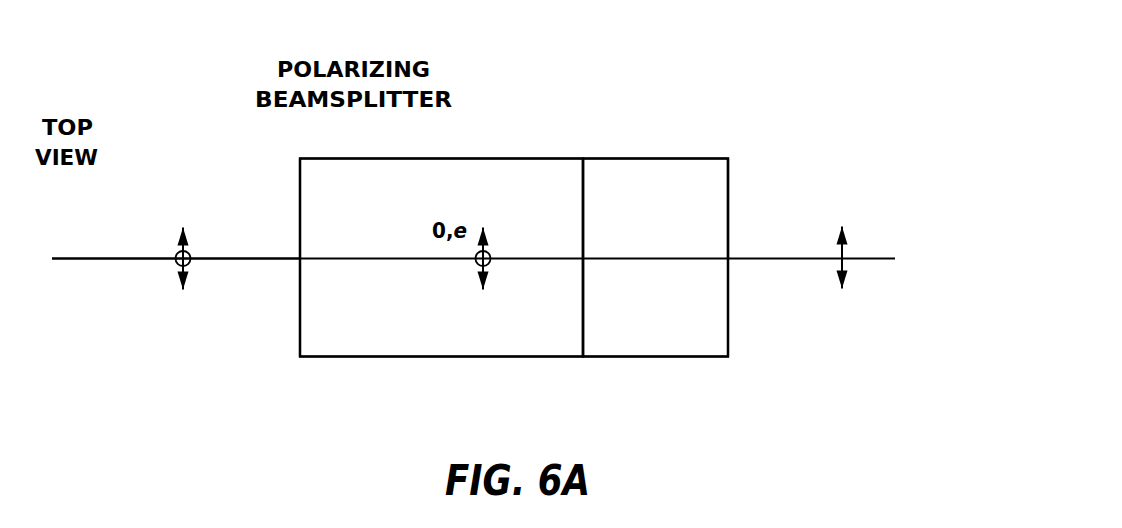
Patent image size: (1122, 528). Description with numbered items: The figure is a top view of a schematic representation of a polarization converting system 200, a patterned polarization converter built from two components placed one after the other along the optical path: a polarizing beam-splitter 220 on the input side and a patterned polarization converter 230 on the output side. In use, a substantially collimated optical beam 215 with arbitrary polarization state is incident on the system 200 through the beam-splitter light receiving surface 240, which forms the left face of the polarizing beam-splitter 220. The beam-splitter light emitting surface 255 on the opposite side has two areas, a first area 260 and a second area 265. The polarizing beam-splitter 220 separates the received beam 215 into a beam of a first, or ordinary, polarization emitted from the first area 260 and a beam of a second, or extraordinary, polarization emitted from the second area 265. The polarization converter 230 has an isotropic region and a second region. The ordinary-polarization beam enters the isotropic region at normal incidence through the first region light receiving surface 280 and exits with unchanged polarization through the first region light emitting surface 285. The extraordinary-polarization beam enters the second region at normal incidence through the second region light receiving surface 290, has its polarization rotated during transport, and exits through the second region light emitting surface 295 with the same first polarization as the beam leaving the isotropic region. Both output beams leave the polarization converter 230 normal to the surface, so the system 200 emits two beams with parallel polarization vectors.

The polarization converting system 200 is at (555, 181).
The substantially collimated optical beam 215 is at (125, 259).
The polarizing beam-splitter 220 is at (325, 183).
The patterned polarization converter 230 is at (697, 195).
The beam-splitter light receiving surface 240 is at (300, 325).
The beam-splitter light emitting surface 255 is at (728, 233).
The first area 260 is at (575, 175).
The second area 265 is at (567, 322).
The first region light receiving surface 280 is at (592, 183).
The first region light emitting surface 285 is at (728, 233).
The second region light receiving surface 290 is at (598, 322).
The second region light emitting surface 295 is at (730, 305).